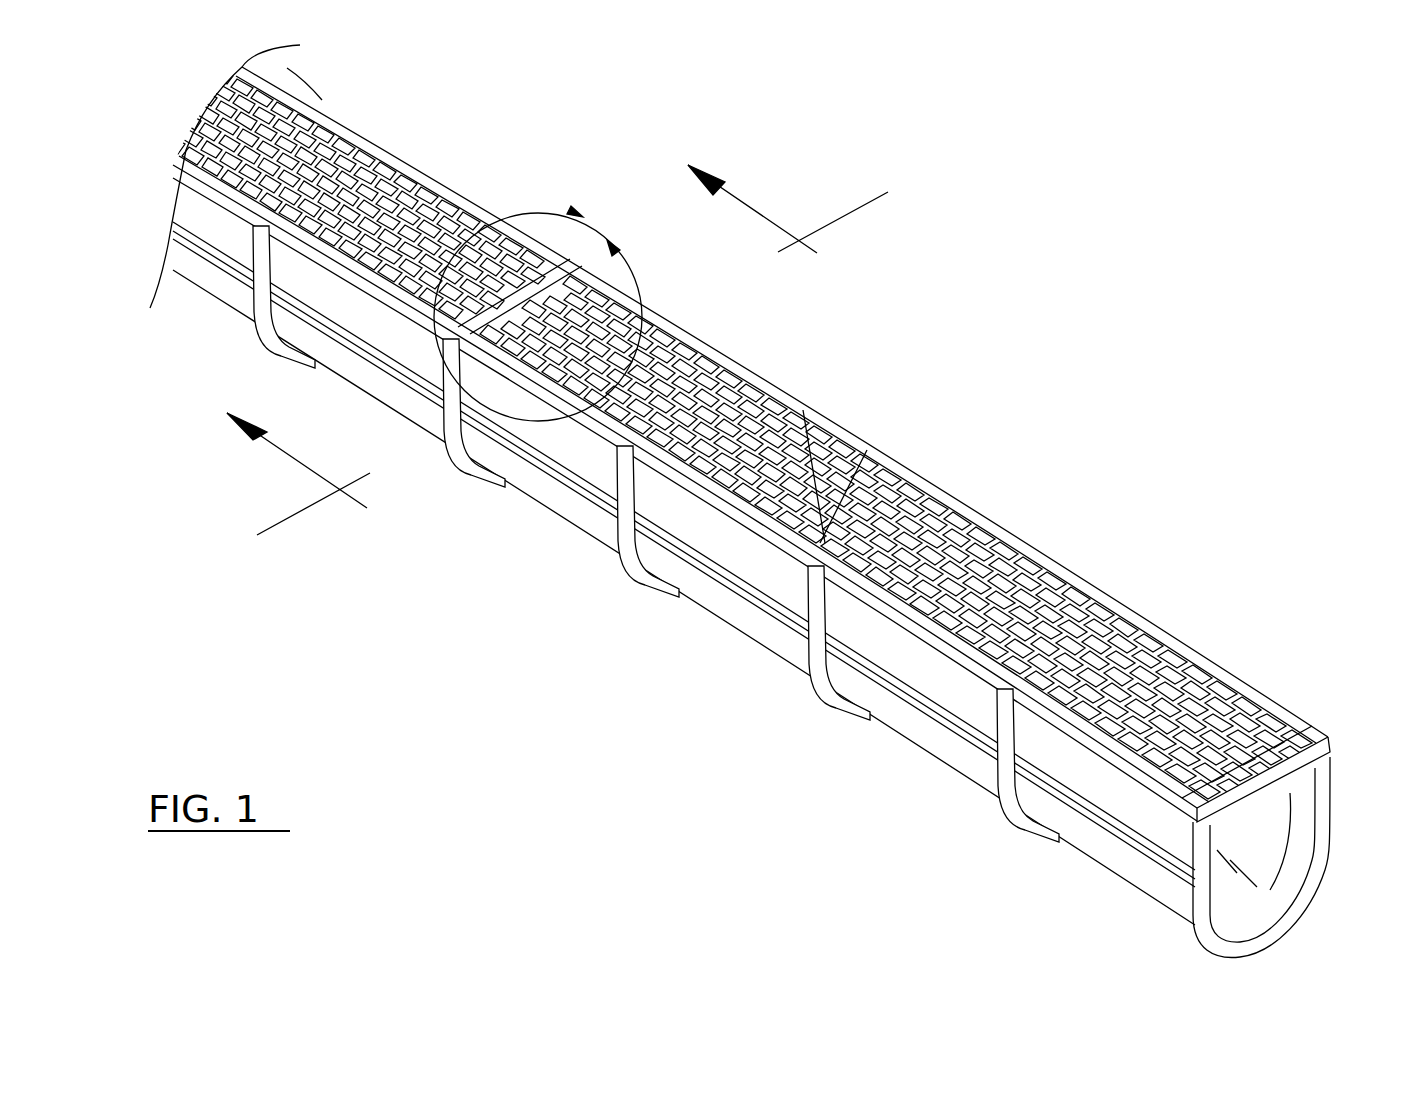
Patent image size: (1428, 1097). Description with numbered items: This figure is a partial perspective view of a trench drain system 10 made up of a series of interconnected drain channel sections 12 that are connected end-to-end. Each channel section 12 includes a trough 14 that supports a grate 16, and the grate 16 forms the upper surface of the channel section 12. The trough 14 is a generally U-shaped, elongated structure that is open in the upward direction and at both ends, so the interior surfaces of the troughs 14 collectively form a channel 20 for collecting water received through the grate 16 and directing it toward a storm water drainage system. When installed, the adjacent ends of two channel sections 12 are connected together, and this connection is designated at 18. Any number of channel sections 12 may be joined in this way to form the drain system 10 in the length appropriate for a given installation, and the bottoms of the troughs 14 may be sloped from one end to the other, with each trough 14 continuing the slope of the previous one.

The trench drain system 10 is at (1082, 238).
The drain channel section 12 is at (217, 308).
The trough 14 is at (372, 377).
The grate 16 is at (348, 128).
The connection of adjacent channel section ends 18 is at (459, 489).
The channel 20 is at (1262, 846).